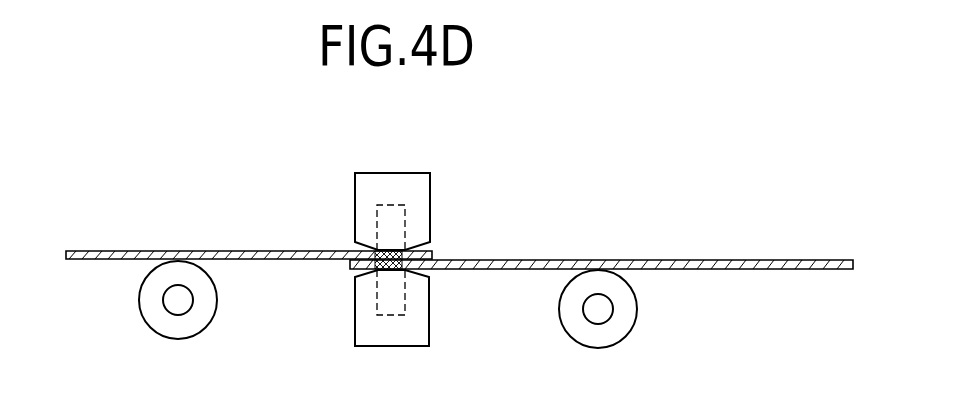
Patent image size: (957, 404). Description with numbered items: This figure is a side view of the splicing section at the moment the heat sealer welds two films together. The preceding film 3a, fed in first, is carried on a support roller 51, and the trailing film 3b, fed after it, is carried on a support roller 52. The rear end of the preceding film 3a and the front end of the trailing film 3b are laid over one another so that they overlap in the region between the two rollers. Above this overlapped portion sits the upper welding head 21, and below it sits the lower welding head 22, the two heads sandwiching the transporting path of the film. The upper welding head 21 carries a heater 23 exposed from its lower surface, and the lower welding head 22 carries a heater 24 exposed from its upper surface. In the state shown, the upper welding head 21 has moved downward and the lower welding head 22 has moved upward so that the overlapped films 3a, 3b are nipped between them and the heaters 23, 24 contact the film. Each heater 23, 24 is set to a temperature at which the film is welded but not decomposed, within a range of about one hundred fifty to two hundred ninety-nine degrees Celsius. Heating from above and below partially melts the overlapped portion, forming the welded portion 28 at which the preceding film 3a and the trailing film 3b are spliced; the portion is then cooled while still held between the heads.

The upper welding head 21 is at (420, 184).
The lower welding head 22 is at (420, 338).
The heater 23 is at (377, 223).
The heater 24 is at (377, 292).
The welded portion 28 is at (432, 248).
The preceding film 3a is at (703, 270).
The trailing film 3b is at (108, 250).
The support roller 51 is at (558, 323).
The support roller 52 is at (142, 313).